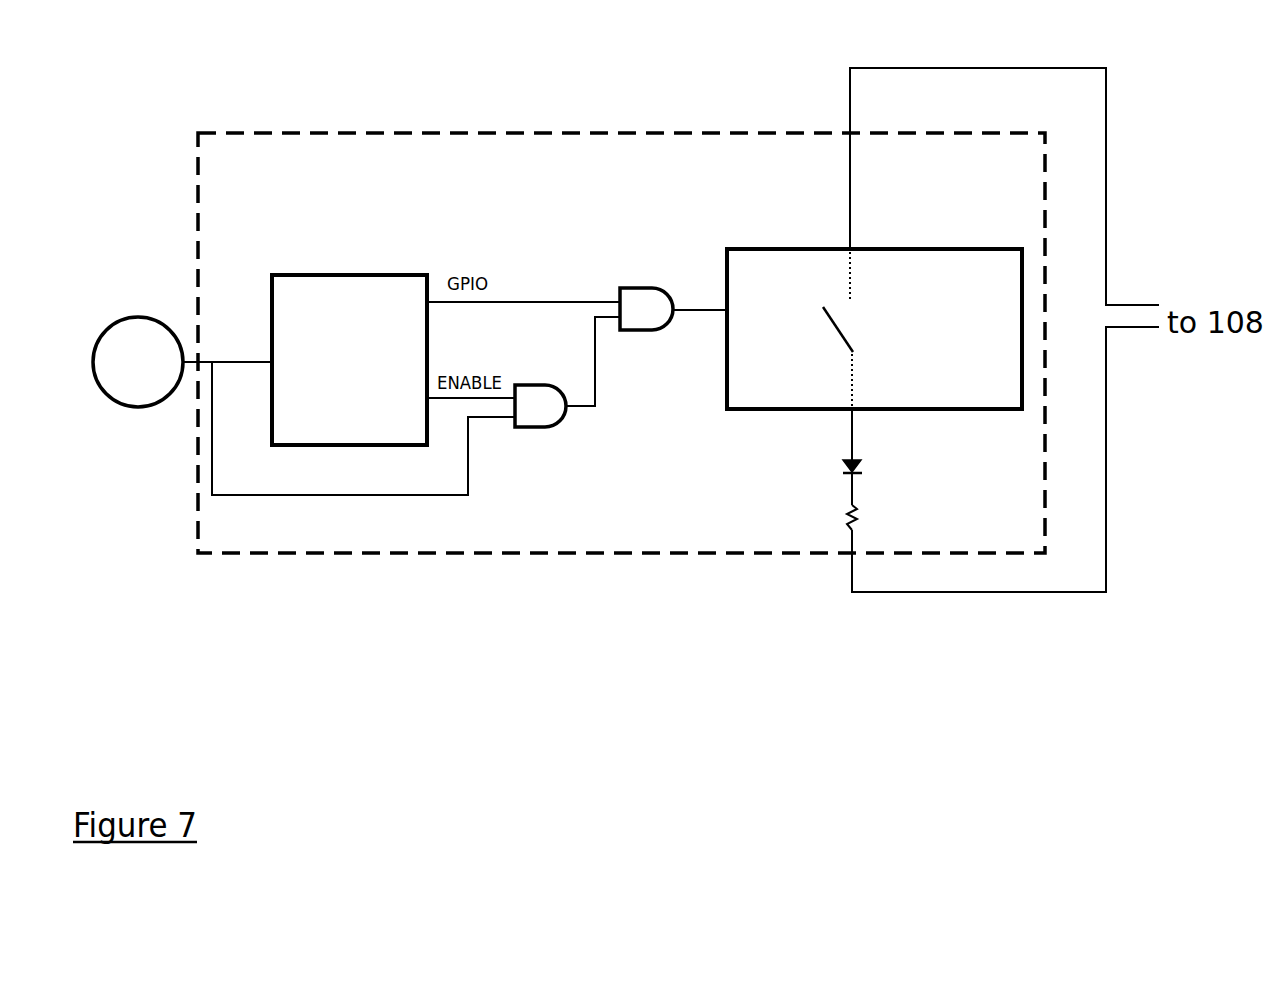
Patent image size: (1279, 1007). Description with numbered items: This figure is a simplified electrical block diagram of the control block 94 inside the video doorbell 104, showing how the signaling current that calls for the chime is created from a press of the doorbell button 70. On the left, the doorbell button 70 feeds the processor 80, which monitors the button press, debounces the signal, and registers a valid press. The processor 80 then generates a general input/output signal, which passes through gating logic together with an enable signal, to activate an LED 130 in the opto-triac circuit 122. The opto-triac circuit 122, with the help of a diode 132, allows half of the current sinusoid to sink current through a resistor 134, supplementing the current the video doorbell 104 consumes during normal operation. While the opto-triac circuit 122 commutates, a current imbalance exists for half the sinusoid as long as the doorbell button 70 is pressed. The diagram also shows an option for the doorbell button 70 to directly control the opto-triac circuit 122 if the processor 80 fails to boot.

The doorbell button 70 is at (114, 378).
The processor 80 is at (326, 374).
The control block 94 is at (337, 135).
The video doorbell 104 is at (621, 343).
The opto-triac circuit 122 is at (915, 338).
The LED 130 is at (828, 318).
The diode 132 is at (842, 469).
The resistor 134 is at (862, 512).